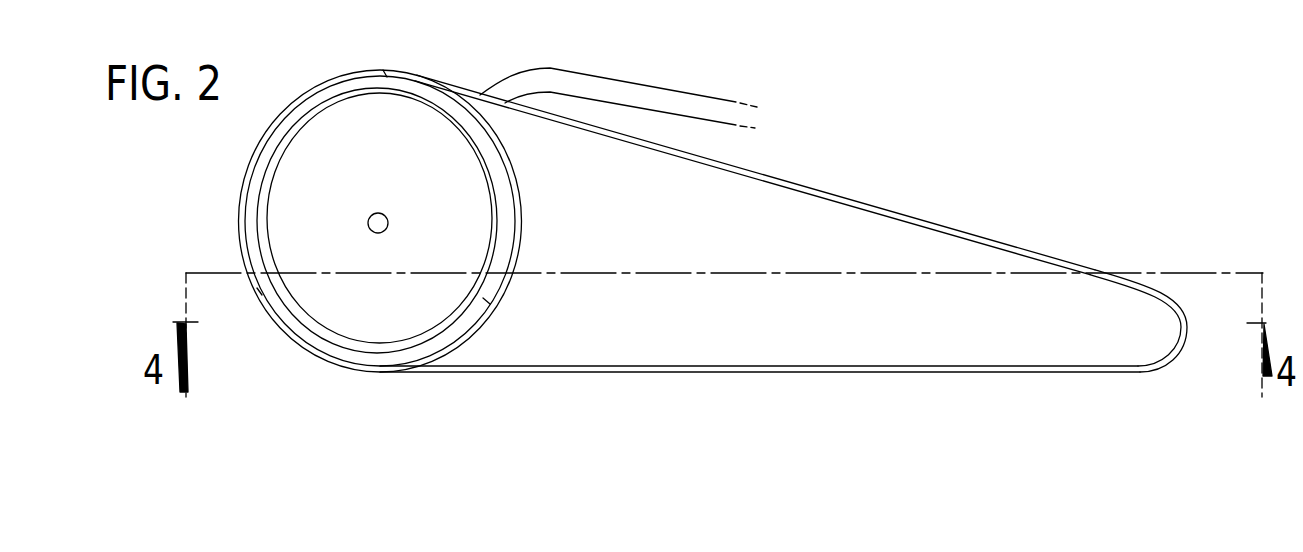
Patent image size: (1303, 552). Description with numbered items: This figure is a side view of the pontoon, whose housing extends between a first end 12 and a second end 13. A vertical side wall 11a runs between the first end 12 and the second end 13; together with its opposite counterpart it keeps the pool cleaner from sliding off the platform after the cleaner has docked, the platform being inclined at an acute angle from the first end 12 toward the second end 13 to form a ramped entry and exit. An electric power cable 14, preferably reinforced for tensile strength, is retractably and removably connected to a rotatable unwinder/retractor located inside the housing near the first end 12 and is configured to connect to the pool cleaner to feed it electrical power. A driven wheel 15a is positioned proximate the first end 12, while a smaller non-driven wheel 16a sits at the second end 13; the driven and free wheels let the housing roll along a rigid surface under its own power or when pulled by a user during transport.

The vertical side wall 11a is at (622, 214).
The first end 12 is at (255, 333).
The second end 13 is at (1196, 368).
The electric power cable 14 is at (663, 98).
The driven wheel 15a is at (363, 167).
The non-driven wheel 16a is at (1098, 372).